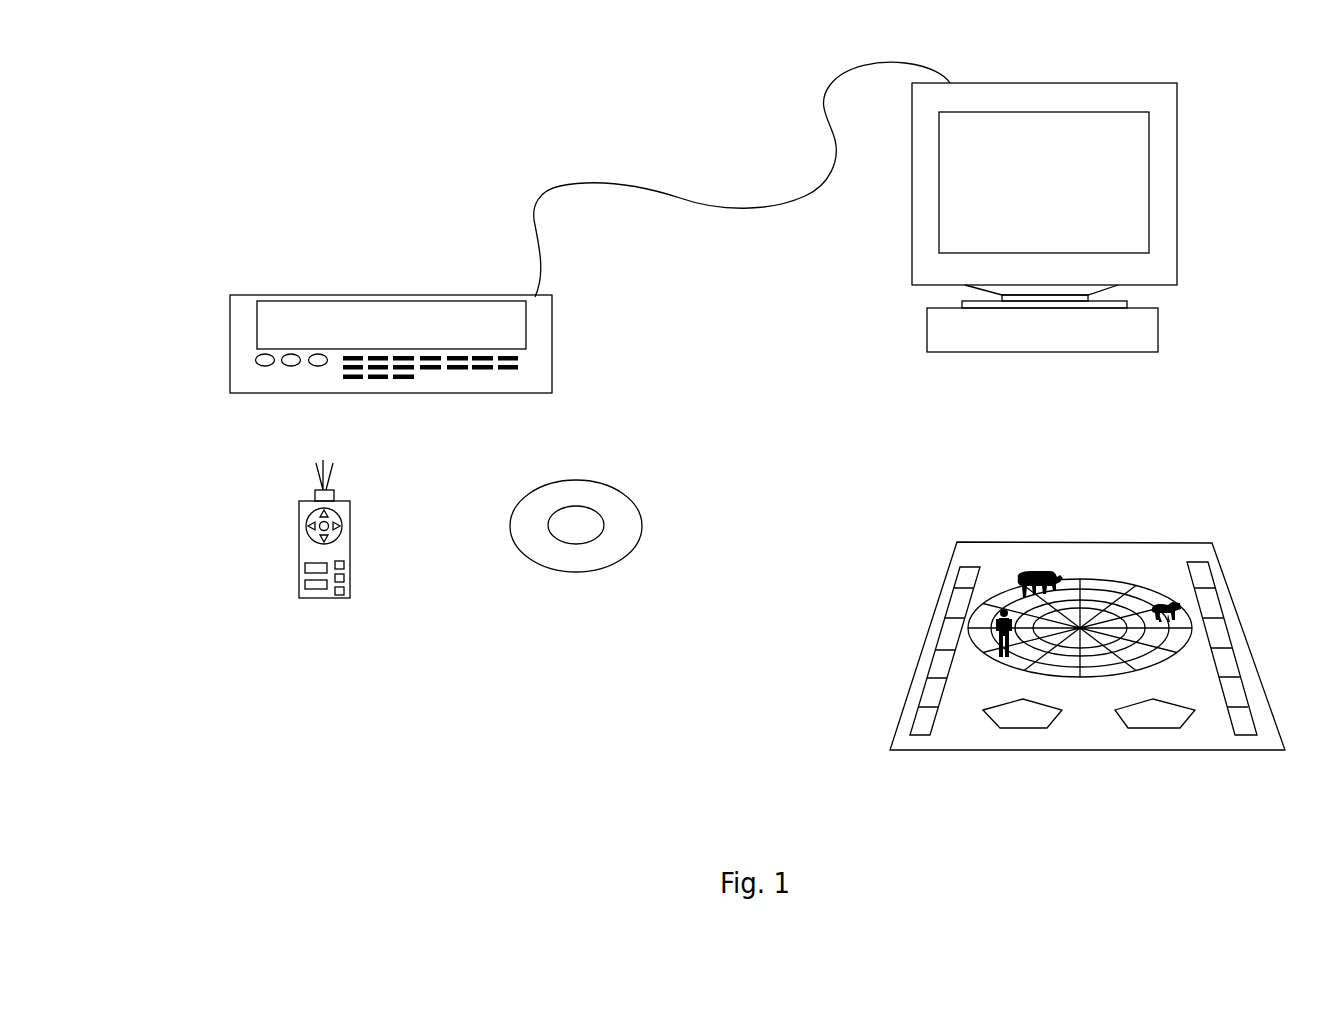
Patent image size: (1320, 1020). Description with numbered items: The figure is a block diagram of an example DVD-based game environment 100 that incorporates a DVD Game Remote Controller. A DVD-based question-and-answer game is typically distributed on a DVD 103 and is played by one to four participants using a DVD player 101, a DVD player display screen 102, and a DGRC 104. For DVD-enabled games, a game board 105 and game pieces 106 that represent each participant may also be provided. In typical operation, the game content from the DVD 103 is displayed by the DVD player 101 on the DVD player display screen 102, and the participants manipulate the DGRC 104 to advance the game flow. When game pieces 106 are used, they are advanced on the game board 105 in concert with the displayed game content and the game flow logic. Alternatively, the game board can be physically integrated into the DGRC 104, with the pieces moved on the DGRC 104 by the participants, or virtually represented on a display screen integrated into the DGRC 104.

The DVD-based game environment 100 is at (327, 130).
The DVD player 101 is at (555, 358).
The DVD player display screen 102 is at (1137, 83).
The DVD 103 is at (642, 520).
The DGRC 104 is at (350, 550).
The game board 105 is at (1163, 542).
The game pieces 106 is at (1060, 573).